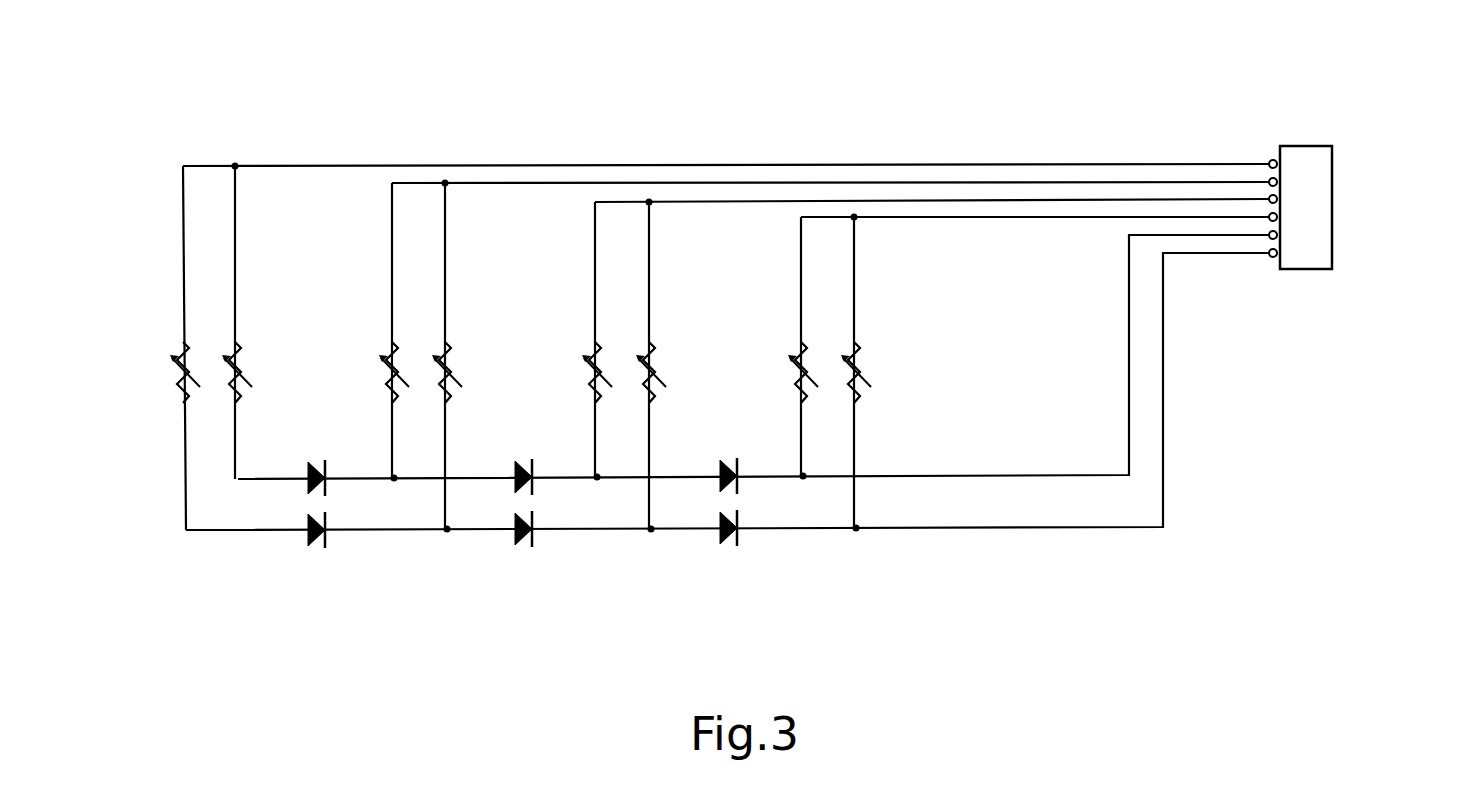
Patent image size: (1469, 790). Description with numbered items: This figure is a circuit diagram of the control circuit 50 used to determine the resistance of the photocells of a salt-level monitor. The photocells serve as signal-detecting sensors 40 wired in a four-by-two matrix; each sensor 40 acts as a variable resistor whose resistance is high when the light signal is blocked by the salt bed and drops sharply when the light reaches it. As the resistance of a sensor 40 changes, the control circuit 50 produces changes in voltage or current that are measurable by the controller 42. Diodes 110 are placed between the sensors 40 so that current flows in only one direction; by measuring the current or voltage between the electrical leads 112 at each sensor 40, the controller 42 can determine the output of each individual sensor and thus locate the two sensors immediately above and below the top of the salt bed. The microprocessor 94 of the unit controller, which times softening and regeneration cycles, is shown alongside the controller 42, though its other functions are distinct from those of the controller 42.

The electrical leads 112 is at (459, 166).
The sensor 40 is at (238, 350).
The diodes 110 is at (318, 548).
The microprocessor 94 is at (1310, 178).
The controller 42 is at (1315, 243).
The control circuit 50 is at (1250, 468).